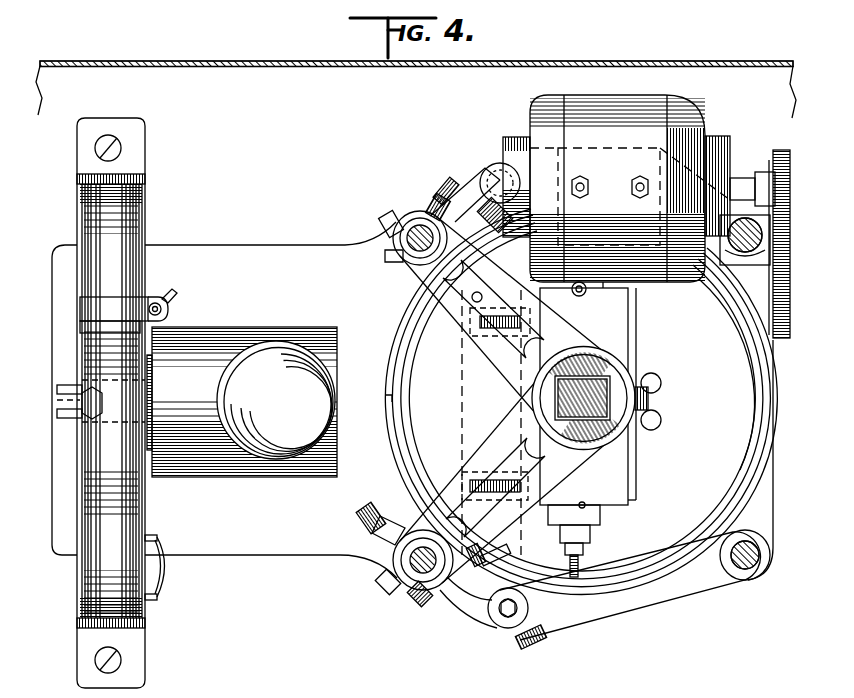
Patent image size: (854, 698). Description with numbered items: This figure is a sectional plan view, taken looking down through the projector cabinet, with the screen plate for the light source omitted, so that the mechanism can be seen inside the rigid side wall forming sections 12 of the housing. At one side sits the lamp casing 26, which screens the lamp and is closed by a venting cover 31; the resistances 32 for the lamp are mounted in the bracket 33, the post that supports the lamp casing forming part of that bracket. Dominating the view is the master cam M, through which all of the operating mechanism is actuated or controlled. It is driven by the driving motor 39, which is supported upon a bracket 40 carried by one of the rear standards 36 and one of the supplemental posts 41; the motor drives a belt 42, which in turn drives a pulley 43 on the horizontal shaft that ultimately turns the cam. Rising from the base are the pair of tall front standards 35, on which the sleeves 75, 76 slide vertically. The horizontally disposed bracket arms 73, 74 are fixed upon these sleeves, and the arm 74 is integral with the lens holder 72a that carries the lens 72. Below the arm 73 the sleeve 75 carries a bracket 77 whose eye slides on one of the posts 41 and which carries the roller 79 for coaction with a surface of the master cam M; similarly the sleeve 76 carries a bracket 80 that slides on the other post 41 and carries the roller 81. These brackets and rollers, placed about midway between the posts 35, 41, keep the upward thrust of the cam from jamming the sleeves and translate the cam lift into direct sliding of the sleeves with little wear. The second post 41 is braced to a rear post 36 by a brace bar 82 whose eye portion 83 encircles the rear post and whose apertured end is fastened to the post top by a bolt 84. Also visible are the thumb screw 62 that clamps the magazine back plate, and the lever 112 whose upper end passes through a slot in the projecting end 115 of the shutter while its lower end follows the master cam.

The side wall forming sections 12 is at (262, 67).
The lamp casing 26 is at (218, 332).
The cover 31 is at (305, 385).
The resistances 32 is at (117, 274).
The bracket 33 is at (125, 176).
The master cam M is at (778, 407).
The bracket 40 is at (614, 150).
The belt 42 is at (810, 225).
The pulley 43 is at (792, 295).
The rear standards 36 is at (745, 215).
The driving motor 39 is at (647, 285).
The roller 81 is at (497, 242).
The bracket 80 is at (470, 178).
The sleeve 76 is at (430, 206).
The bracket arm 74 is at (480, 356).
The bracket arm 73 is at (445, 478).
The front standards 35 is at (398, 250).
The sleeve 75 is at (408, 530).
The lens 72 is at (612, 388).
The lens holder 72a is at (612, 432).
The thumb screw 62 is at (655, 412).
The projecting end of the shutter 115 is at (610, 520).
The lever 112 is at (590, 542).
The bracket 77 is at (460, 608).
The roller 79 is at (500, 560).
The supplemental posts 41 is at (505, 622).
The bolt 84 is at (540, 620).
The brace bar 82 is at (650, 595).
The eye portion 83 is at (742, 570).